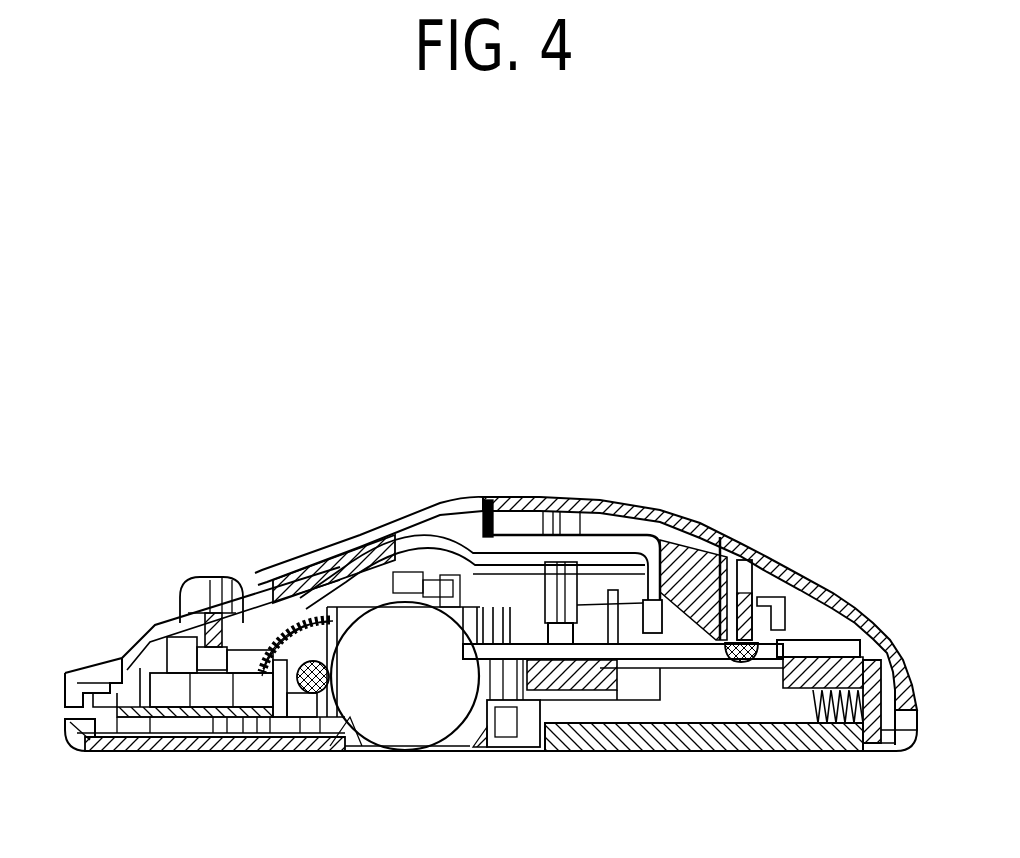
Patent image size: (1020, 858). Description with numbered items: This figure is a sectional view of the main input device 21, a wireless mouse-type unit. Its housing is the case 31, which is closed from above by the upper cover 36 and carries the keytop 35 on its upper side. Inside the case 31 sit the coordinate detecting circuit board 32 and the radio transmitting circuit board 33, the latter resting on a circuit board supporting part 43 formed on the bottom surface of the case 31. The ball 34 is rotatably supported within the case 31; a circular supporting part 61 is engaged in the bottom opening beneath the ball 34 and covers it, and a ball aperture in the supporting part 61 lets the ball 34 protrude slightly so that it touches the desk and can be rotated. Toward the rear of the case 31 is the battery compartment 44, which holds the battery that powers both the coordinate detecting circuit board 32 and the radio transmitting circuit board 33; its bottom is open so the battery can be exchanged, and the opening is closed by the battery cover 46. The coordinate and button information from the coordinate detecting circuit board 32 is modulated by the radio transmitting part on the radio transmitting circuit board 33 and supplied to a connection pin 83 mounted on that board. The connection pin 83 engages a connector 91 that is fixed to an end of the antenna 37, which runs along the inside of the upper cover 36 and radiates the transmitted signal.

The main input device 21 is at (382, 343).
The case 31 is at (83, 750).
The coordinate detecting circuit board 32 is at (145, 720).
The radio transmitting circuit board 33 is at (807, 643).
The ball 34 is at (393, 722).
The keytop 35 is at (300, 567).
The upper cover 36 is at (519, 492).
The antenna 37 is at (440, 525).
The circuit board supporting part 43 is at (857, 662).
The battery compartment 44 is at (590, 715).
The battery cover 46 is at (670, 737).
The supporting part 61 is at (473, 745).
The connection pin 83 is at (673, 632).
The connector 91 is at (680, 595).